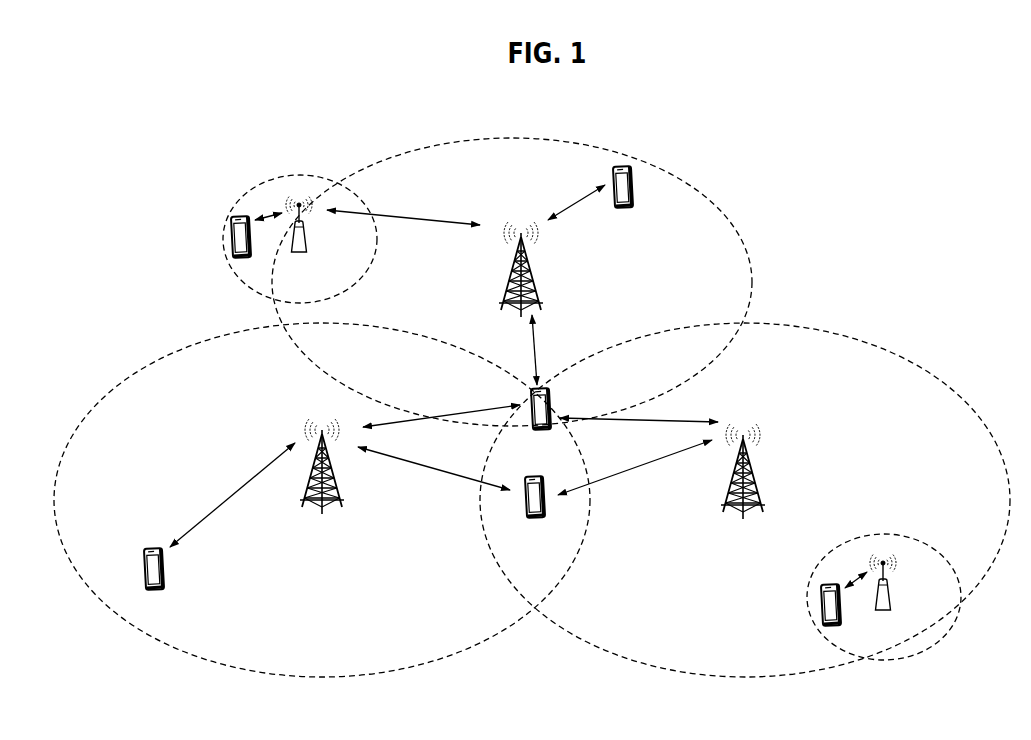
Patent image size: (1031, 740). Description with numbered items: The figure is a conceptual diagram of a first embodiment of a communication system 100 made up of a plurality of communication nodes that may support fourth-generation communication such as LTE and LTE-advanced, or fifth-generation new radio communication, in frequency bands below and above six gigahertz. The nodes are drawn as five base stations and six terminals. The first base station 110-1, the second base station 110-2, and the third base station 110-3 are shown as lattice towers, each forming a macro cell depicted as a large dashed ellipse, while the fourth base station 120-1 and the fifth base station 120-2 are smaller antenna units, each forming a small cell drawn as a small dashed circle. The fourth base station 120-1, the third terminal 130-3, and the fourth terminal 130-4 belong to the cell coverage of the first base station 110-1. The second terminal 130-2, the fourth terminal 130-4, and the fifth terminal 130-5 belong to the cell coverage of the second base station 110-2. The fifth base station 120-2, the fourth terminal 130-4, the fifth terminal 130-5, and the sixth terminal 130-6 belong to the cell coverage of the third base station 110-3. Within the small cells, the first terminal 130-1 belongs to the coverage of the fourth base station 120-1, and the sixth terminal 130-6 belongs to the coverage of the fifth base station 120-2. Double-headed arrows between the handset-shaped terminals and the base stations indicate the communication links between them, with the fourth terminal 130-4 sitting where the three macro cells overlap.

The communication system 100 is at (525, 113).
The first base station 110-1 is at (532, 272).
The second base station 110-2 is at (322, 514).
The third base station 110-3 is at (755, 470).
The fourth base station 120-1 is at (307, 237).
The fifth base station 120-2 is at (890, 589).
The first terminal 130-1 is at (232, 236).
The second terminal 130-2 is at (165, 572).
The third terminal 130-3 is at (633, 195).
The fourth terminal 130-4 is at (551, 395).
The fifth terminal 130-5 is at (538, 478).
The sixth terminal 130-6 is at (822, 603).